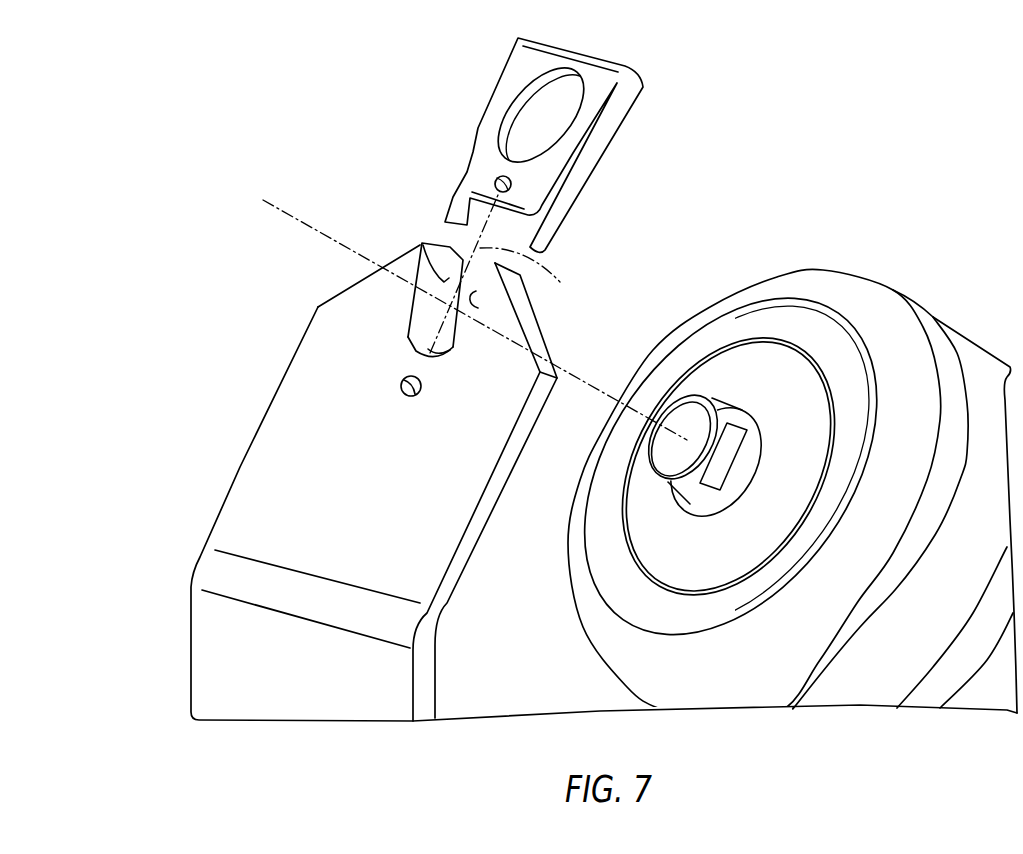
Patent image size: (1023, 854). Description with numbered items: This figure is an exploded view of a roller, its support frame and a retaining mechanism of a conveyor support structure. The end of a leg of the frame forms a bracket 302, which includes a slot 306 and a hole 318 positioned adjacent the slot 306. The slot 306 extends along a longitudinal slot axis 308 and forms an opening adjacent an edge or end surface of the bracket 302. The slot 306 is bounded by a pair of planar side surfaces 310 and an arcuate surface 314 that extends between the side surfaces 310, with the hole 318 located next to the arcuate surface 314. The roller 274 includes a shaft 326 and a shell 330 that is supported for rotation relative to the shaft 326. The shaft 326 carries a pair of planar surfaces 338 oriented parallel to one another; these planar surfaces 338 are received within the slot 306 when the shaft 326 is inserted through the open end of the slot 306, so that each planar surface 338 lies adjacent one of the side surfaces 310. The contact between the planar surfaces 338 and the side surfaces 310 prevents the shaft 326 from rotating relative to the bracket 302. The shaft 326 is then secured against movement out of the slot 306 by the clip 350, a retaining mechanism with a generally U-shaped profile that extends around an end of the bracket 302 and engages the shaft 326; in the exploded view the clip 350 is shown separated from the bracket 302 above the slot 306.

The roller 274 is at (965, 285).
The bracket 302 is at (225, 463).
The slot 306 is at (395, 342).
The longitudinal slot axis 308 is at (535, 270).
The planar side surfaces 310 is at (449, 287).
The arcuate surface 314 is at (442, 350).
The hole 318 is at (411, 397).
The shaft 326 is at (656, 500).
The shell 330 is at (826, 283).
The planar surfaces 338 is at (733, 451).
The clip 350 is at (680, 83).